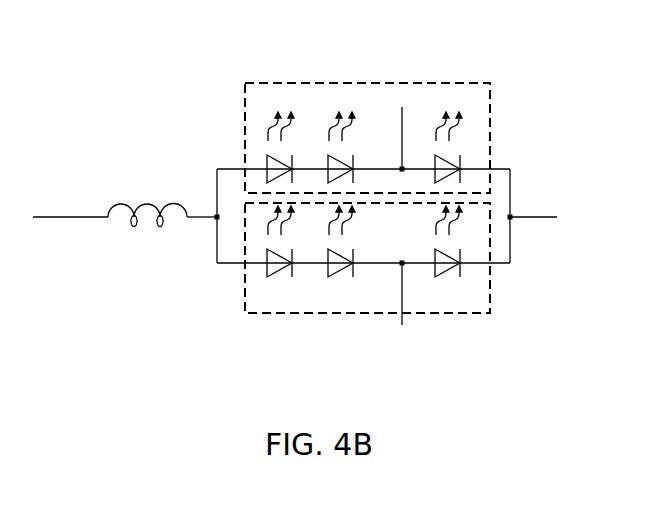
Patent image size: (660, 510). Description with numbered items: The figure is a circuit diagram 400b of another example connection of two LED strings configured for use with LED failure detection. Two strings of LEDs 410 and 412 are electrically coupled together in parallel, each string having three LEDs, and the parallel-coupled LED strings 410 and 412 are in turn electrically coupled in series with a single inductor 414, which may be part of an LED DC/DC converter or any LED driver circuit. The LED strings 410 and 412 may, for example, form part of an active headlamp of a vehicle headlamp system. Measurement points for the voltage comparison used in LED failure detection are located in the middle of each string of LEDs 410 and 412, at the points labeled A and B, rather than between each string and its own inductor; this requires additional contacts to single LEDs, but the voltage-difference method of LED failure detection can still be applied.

The LED lighting circuit 400b is at (652, 66).
The LED string 410 is at (368, 83).
The LED string 412 is at (328, 313).
The inductor 414 is at (128, 154).